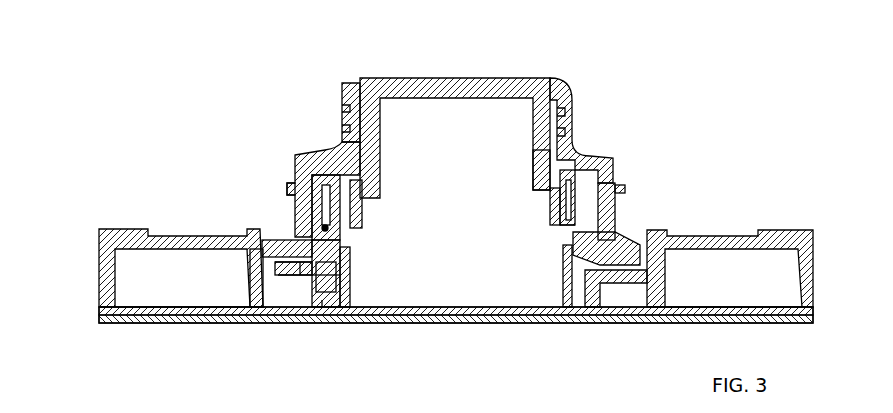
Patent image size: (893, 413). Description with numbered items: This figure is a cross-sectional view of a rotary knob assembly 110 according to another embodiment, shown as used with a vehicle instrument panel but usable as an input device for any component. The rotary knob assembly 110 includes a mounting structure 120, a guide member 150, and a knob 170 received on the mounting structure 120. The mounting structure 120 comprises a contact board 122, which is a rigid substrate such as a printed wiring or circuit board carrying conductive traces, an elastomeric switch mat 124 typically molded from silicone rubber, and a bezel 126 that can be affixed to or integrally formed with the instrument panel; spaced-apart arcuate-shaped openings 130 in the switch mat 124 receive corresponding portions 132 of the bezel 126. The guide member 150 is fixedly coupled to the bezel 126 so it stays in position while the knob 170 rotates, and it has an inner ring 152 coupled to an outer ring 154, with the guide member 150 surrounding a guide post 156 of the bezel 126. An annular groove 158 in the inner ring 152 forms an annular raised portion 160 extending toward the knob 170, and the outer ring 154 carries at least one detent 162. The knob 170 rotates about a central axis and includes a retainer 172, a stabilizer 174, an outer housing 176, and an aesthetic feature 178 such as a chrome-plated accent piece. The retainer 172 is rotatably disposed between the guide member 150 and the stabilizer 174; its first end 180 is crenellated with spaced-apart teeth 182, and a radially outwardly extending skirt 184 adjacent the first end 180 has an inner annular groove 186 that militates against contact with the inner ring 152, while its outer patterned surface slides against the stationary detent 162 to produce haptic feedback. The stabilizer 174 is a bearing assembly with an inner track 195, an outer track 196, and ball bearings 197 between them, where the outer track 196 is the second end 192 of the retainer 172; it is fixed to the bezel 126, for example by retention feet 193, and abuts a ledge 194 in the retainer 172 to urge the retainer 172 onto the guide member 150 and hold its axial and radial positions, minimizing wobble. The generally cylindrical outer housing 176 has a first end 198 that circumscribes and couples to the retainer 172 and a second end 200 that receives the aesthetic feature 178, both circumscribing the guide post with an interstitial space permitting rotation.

The rotary knob assembly 110 is at (150, 86).
The mounting structure 120 is at (50, 225).
The contact board 122 is at (99, 320).
The elastomeric switch mat 124 is at (99, 310).
The bezel 126 is at (99, 239).
The arcuate-shaped openings 130 is at (556, 323).
The portions of the bezel 132 is at (331, 272).
The guide member 150 is at (330, 284).
The inner ring 152 is at (332, 275).
The outer ring 154 is at (292, 267).
The guide post 156 is at (358, 205).
The annular groove 158 is at (306, 271).
The annular raised portion 160 is at (346, 256).
The detent 162 is at (640, 242).
The knob 170 is at (292, 106).
The retainer 172 is at (262, 258).
The stabilizer 174 is at (555, 183).
The outer housing 176 is at (298, 150).
The aesthetic feature 178 is at (346, 83).
The first end of the retainer 180 is at (336, 292).
The teeth 182 is at (328, 270).
The skirt 184 is at (265, 247).
The annular groove 186 is at (336, 238).
The second end of the retainer 192 is at (300, 186).
The retention feet 193 is at (575, 252).
The ledge 194 is at (565, 238).
The inner track 195 is at (560, 238).
The outer track 196 is at (612, 160).
The ball bearings 197 is at (615, 182).
The first end of the outer housing 198 is at (618, 210).
The second end of the outer housing 200 is at (566, 97).